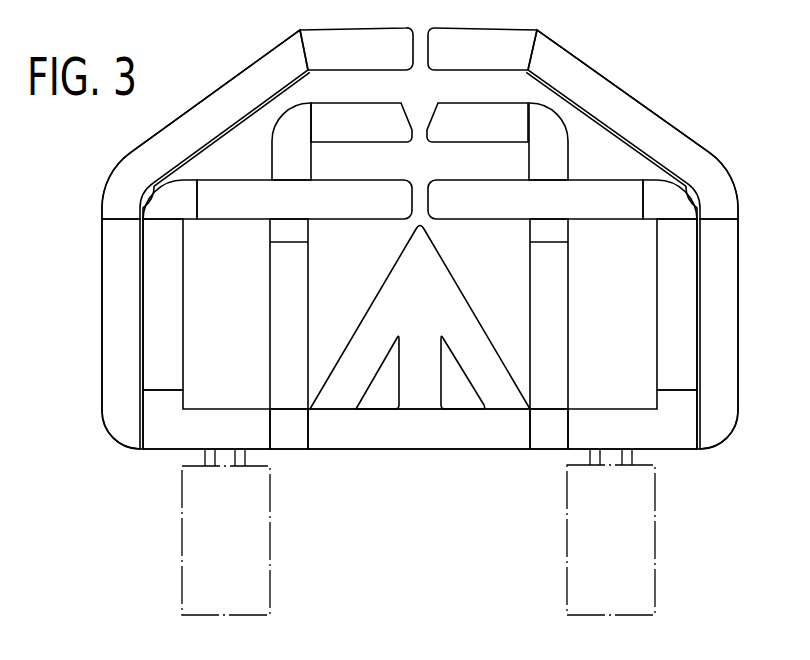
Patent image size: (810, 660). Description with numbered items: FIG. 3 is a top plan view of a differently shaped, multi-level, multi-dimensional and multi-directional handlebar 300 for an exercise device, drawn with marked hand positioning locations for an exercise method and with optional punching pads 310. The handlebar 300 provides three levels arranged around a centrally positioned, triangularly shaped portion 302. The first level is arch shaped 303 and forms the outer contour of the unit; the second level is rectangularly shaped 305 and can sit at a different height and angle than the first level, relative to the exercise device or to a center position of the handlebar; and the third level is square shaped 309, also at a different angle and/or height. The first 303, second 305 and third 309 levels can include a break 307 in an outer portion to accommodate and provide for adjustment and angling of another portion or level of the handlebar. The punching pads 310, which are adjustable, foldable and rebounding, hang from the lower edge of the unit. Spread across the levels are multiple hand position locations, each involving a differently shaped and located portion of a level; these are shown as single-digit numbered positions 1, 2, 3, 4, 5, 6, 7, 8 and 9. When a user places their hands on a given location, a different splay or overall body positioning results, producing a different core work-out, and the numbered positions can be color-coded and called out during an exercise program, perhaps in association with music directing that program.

The hand position location 1 is at (419, 429).
The hand position location 2 is at (420, 419).
The hand position location 3 is at (420, 334).
The hand position location 4 is at (420, 124).
The hand position location 5 is at (418, 49).
The hand position location 6 is at (420, 200).
The hand position location 7 is at (419, 314).
The hand position location 8 is at (420, 141).
The hand position location 9 is at (419, 122).
The handlebar 300 is at (708, 62).
The triangularly shaped portion 302 is at (471, 297).
The arch shaped first level 303 is at (670, 125).
The rectangularly shaped second level 305 is at (590, 218).
The break 307 is at (418, 118).
The square shaped third level 309 is at (505, 101).
The punching pads 310 is at (181, 538).